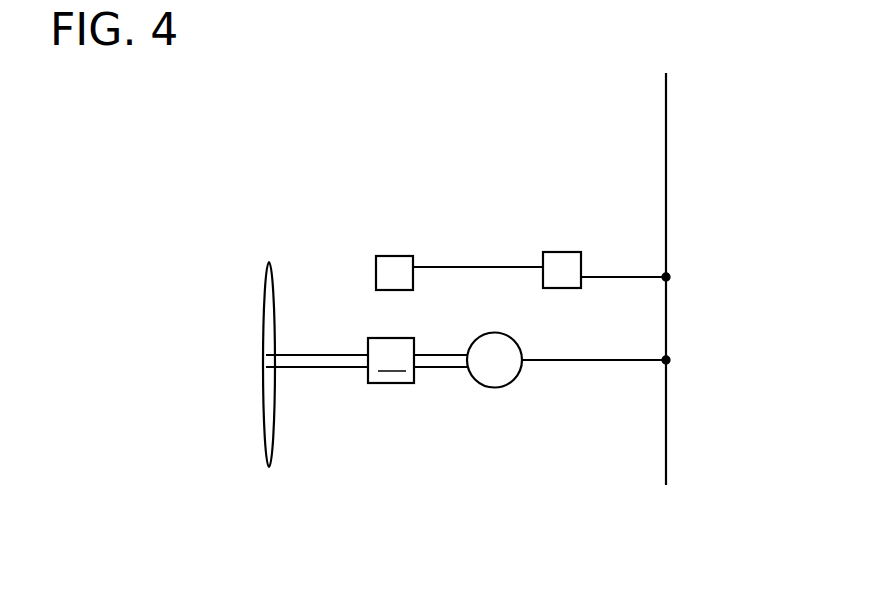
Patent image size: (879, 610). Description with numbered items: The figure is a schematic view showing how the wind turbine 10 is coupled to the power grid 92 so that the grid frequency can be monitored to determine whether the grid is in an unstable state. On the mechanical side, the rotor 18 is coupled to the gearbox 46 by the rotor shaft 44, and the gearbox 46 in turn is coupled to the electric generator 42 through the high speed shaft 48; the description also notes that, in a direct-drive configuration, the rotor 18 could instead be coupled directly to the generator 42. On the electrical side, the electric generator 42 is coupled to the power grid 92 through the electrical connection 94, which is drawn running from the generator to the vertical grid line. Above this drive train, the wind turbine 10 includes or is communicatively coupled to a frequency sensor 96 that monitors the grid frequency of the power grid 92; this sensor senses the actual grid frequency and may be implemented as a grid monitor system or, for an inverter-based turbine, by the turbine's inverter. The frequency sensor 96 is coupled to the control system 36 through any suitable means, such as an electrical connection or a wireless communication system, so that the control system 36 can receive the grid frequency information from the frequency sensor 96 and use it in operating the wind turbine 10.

The wind turbine 10 is at (285, 183).
The rotor 18 is at (292, 427).
The control system 36 is at (385, 272).
The electric generator 42 is at (492, 377).
The rotor shaft 44 is at (290, 363).
The gearbox 46 is at (391, 360).
The high speed shaft 48 is at (425, 362).
The power grid 92 is at (665, 110).
The electrical connection 94 is at (548, 361).
The frequency sensor 96 is at (556, 262).